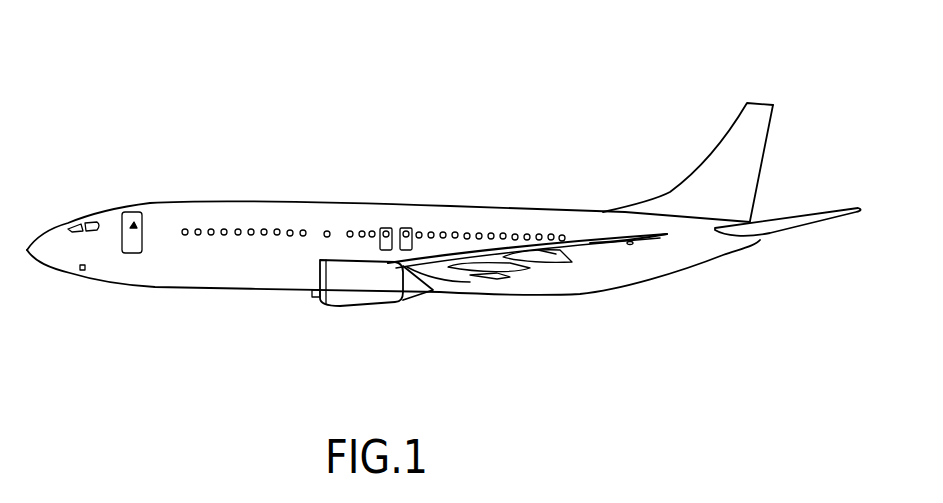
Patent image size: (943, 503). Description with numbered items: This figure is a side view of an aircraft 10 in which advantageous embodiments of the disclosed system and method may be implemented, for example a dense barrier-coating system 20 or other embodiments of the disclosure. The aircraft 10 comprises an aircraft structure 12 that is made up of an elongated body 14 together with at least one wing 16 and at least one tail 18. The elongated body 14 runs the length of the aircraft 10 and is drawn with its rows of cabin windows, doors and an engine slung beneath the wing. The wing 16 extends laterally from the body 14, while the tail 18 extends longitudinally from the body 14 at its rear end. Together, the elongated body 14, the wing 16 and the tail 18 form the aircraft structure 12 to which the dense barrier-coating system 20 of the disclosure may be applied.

The aircraft 10 is at (514, 167).
The aircraft structure 12 is at (120, 285).
The elongated body 14 is at (318, 216).
The wing 16 is at (606, 242).
The tail 18 is at (753, 138).
The dense barrier-coating system 20 is at (740, 187).